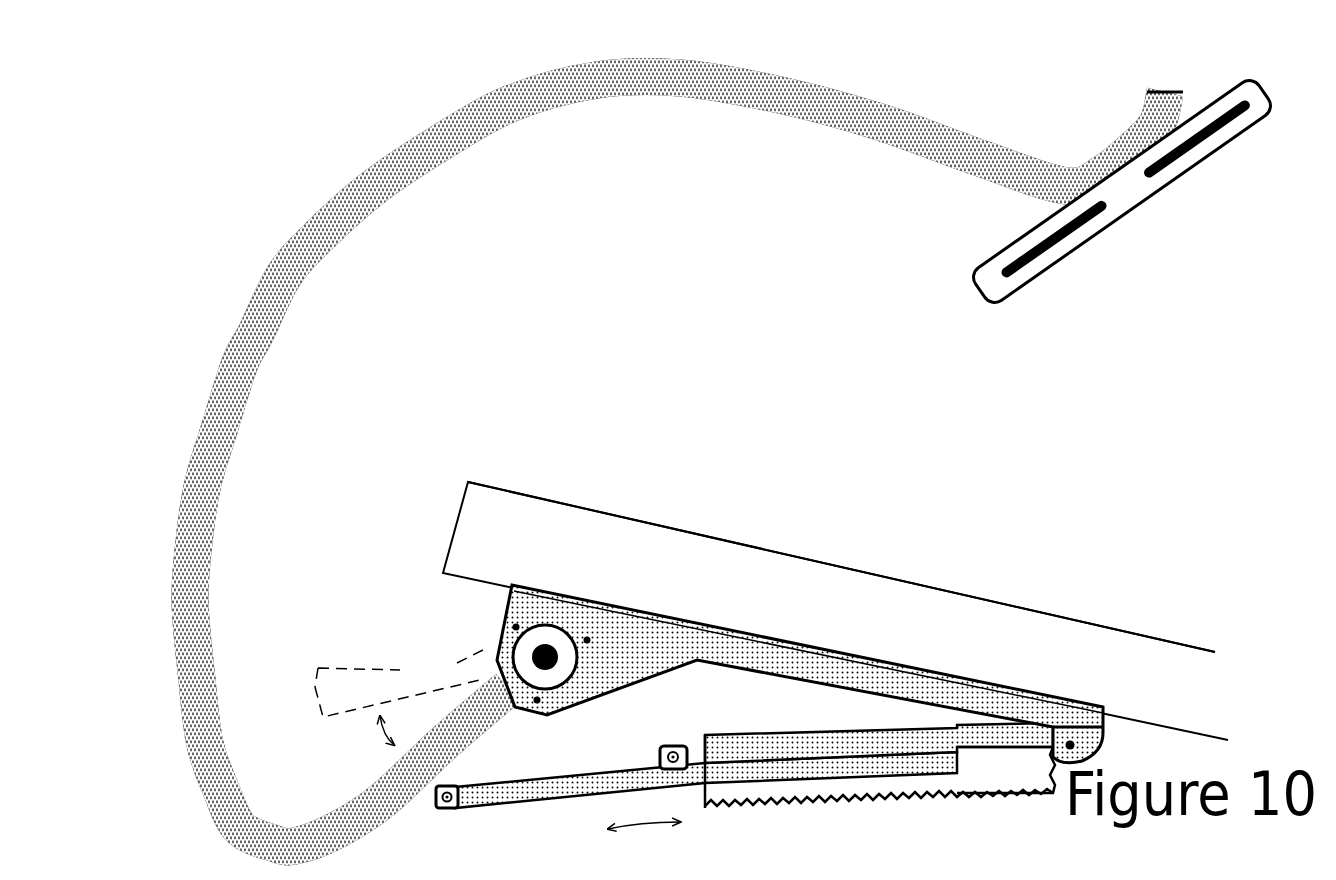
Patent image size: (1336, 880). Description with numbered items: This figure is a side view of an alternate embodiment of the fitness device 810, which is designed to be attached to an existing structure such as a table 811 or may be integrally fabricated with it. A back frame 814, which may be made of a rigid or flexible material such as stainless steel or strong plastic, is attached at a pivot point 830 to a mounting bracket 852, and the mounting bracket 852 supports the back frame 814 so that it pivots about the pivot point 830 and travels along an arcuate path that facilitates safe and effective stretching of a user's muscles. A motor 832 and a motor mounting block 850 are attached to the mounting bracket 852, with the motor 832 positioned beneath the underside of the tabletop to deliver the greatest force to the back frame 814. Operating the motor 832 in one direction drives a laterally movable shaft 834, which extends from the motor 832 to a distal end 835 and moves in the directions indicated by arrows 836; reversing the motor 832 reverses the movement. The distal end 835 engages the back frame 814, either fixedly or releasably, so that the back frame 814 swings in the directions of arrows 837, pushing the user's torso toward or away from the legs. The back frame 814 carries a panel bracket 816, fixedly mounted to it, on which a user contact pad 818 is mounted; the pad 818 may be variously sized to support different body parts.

The fitness device 810 is at (1166, 590).
The table 811 is at (623, 507).
The back frame 814 is at (228, 348).
The panel bracket 816 is at (1067, 205).
The user contact pad 818 is at (1108, 228).
The pivot point 830 is at (545, 657).
The motor 832 is at (843, 733).
The laterally movable shaft 834 is at (580, 789).
The distal end 835 is at (438, 810).
The arrows 836 is at (643, 824).
The arrows 837 is at (383, 737).
The motor mounting block 850 is at (977, 778).
The mounting bracket 852 is at (677, 634).